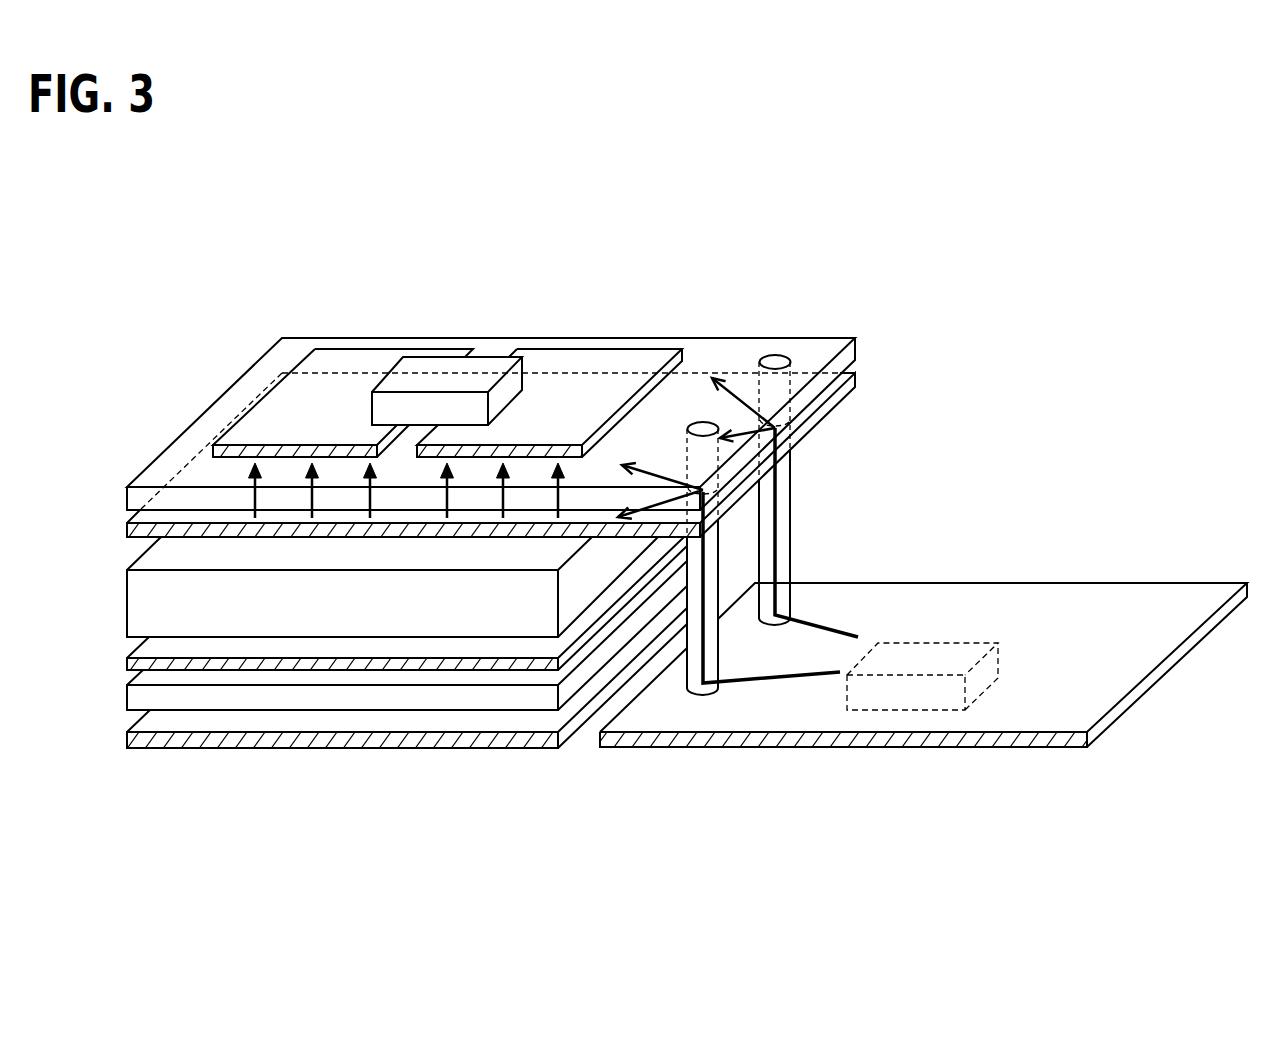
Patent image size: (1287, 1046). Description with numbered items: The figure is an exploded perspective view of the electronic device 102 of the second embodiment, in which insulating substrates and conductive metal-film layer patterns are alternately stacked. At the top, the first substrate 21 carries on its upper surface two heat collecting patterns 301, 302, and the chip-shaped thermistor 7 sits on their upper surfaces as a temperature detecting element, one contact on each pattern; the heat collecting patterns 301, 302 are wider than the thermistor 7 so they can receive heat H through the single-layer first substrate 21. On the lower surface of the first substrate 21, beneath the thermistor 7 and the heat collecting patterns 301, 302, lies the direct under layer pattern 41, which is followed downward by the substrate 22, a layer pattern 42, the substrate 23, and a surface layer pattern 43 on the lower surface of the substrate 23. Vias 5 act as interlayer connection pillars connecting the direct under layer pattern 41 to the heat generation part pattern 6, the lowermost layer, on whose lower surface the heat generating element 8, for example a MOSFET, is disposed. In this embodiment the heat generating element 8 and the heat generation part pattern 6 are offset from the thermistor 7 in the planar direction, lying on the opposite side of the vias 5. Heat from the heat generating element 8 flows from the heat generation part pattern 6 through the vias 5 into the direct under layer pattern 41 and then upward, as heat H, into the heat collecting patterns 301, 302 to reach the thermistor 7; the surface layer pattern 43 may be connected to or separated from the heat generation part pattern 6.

The electronic device 102 is at (942, 252).
The first substrate 21 is at (140, 497).
The direct under layer pattern 41 is at (140, 532).
The substrate 22 is at (140, 608).
The layer pattern 42 is at (138, 665).
The substrate 23 is at (138, 698).
The surface layer pattern 43 is at (138, 738).
The heat collecting pattern 301 is at (355, 360).
The heat collecting pattern 302 is at (550, 360).
The thermistor 7 is at (488, 363).
The heat H is at (250, 500).
The vias 5 is at (790, 478).
The heat generation part pattern 6 is at (1130, 697).
The heat generating element 8 is at (915, 703).